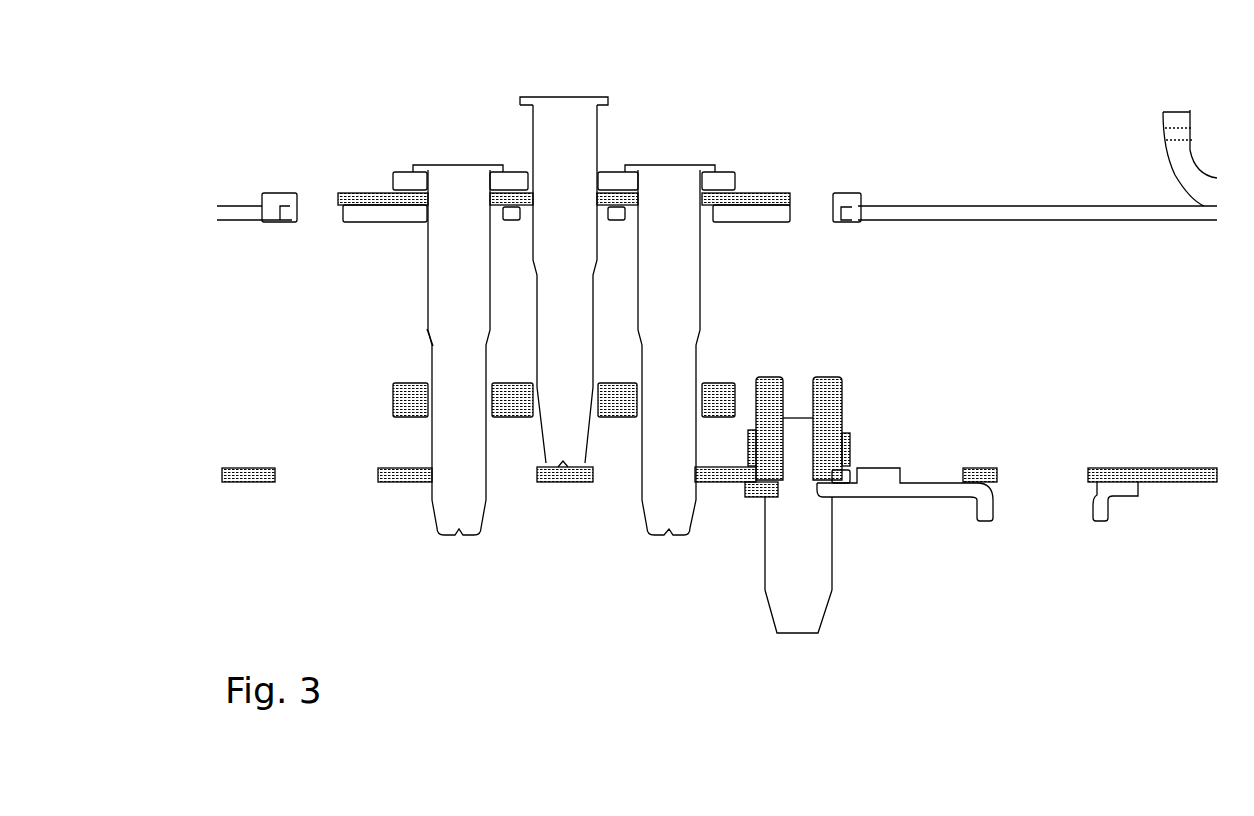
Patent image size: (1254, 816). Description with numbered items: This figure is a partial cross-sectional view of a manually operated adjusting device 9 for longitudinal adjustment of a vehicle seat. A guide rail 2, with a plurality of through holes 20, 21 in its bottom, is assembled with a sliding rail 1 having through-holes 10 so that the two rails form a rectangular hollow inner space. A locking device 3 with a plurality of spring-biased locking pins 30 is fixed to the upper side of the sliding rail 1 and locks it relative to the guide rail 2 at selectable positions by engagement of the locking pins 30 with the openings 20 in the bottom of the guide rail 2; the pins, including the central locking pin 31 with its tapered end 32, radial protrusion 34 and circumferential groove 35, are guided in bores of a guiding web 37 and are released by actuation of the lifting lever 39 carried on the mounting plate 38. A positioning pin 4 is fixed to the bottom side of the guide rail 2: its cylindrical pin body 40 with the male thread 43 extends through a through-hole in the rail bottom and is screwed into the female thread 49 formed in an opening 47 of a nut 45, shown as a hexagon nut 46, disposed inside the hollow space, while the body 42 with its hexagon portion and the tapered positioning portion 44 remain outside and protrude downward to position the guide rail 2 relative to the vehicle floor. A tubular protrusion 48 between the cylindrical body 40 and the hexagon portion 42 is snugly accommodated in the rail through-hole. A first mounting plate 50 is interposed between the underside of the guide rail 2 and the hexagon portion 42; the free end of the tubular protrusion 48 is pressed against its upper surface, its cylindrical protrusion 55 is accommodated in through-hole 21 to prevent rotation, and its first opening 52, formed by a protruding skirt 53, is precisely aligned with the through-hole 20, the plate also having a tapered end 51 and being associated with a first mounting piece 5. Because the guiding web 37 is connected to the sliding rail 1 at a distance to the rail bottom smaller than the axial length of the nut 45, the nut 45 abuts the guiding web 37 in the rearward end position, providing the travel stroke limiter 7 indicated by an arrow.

The sliding rail 1 is at (970, 210).
The guide rail 2 is at (248, 478).
The locking device 3 is at (566, 65).
The positioning pin 4 is at (823, 618).
The first mounting piece 5 is at (1138, 505).
The travel stroke limiter 7 is at (743, 410).
The adjusting device 9 is at (1065, 128).
The through-hole 10 is at (815, 190).
The through hole 20 is at (318, 483).
The through-hole 21 is at (935, 457).
The locking pin 30 is at (440, 265).
The central locking pin 31 is at (586, 314).
The tapered end of locking pin 32 is at (448, 505).
The radial protrusion of locking pin 34 is at (612, 97).
The circumferential groove 35 is at (430, 343).
The guiding web 37 is at (402, 377).
The mounting plate 38 is at (743, 198).
The lifting lever 39 is at (615, 168).
The cylindrical pin body 40 is at (793, 437).
The hexagon portion 42 is at (822, 545).
The male thread 43 is at (818, 437).
The positioning portion 44 is at (782, 607).
The nut 45 is at (828, 402).
The hexagon nut 46 is at (828, 448).
The opening 47 is at (795, 377).
The tubular protrusion 48 is at (757, 495).
The female thread 49 is at (815, 388).
The first mounting plate 50 is at (933, 497).
The tapered end of first mounting plate 51 is at (757, 493).
The first opening 52 is at (1038, 545).
The skirt 53 is at (1103, 523).
The cylindrical protrusion 55 is at (883, 474).